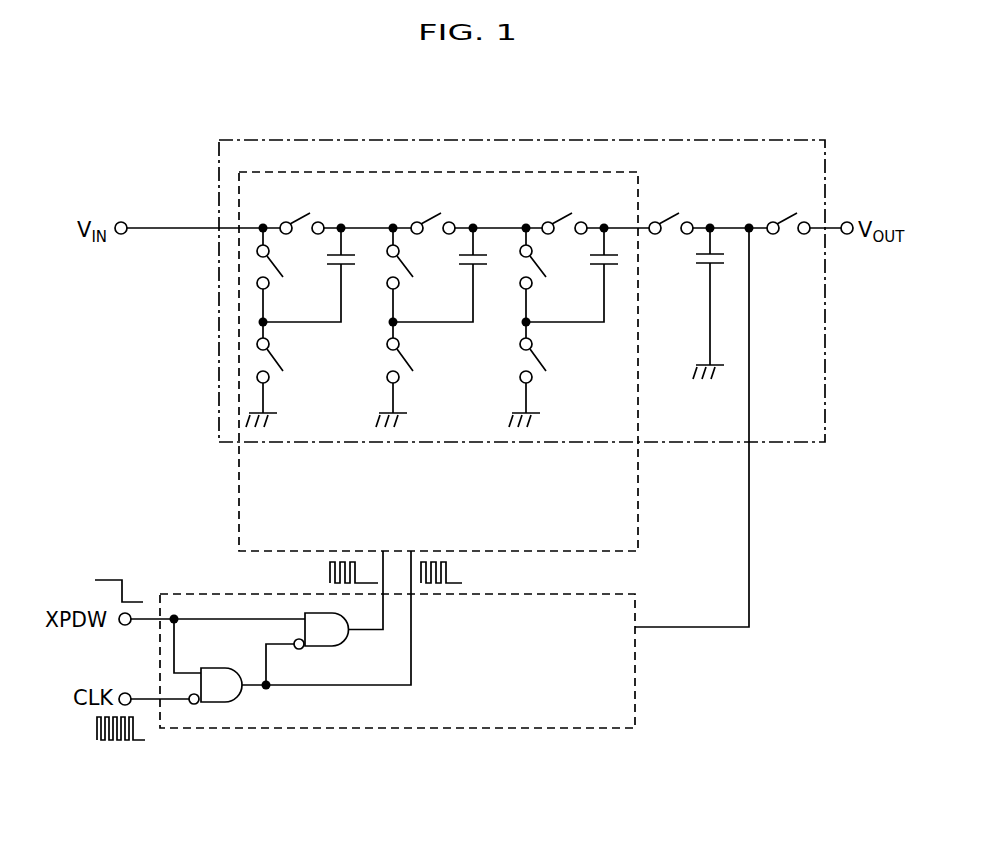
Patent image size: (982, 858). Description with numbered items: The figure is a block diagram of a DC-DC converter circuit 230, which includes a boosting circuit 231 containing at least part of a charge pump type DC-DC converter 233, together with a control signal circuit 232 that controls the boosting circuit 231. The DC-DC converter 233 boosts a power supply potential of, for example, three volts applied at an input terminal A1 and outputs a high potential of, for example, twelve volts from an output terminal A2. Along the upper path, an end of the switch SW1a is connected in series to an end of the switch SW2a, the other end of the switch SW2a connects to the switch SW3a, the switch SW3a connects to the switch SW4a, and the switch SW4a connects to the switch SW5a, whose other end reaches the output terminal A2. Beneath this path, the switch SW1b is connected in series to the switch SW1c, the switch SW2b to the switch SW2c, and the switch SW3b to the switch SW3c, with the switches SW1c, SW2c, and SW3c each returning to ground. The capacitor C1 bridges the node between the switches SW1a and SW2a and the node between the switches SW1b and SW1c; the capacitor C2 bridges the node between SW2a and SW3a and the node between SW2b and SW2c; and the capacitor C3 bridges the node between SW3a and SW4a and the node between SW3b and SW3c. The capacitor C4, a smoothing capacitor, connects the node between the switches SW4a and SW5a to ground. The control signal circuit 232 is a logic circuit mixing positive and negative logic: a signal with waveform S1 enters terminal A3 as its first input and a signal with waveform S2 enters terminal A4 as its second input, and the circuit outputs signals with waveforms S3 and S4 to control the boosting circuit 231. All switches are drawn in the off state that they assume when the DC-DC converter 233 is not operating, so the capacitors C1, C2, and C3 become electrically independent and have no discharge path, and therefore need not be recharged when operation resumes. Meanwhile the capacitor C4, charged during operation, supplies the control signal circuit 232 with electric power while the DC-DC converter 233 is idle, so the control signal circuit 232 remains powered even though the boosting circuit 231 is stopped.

The DC-DC converter circuit 230 is at (161, 157).
The boosting circuit 231 is at (639, 536).
The control signal circuit 232 is at (540, 729).
The DC-DC converter 233 is at (718, 140).
The input terminal A1 is at (121, 222).
The output terminal A2 is at (847, 222).
The terminal A3 is at (122, 626).
The terminal A4 is at (125, 693).
The waveform S1 is at (106, 564).
The waveform S2 is at (124, 757).
The waveform S3 is at (310, 571).
The waveform S4 is at (474, 573).
The switch SW1a is at (309, 210).
The switch SW1b is at (297, 275).
The switch SW1c is at (290, 374).
The switch SW2a is at (435, 210).
The switch SW2b is at (426, 275).
The switch SW2c is at (420, 374).
The switch SW3a is at (568, 210).
The switch SW3b is at (559, 275).
The switch SW3c is at (553, 374).
The switch SW4a is at (676, 210).
The switch SW5a is at (790, 210).
The capacitor C1 is at (321, 275).
The capacitor C2 is at (452, 275).
The capacitor C3 is at (582, 275).
The capacitor C4 is at (701, 303).